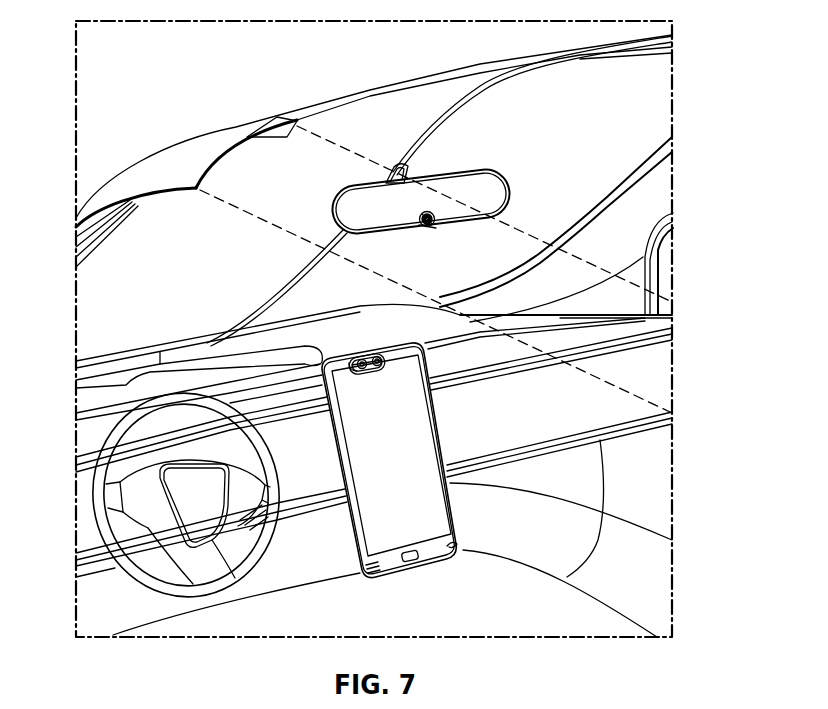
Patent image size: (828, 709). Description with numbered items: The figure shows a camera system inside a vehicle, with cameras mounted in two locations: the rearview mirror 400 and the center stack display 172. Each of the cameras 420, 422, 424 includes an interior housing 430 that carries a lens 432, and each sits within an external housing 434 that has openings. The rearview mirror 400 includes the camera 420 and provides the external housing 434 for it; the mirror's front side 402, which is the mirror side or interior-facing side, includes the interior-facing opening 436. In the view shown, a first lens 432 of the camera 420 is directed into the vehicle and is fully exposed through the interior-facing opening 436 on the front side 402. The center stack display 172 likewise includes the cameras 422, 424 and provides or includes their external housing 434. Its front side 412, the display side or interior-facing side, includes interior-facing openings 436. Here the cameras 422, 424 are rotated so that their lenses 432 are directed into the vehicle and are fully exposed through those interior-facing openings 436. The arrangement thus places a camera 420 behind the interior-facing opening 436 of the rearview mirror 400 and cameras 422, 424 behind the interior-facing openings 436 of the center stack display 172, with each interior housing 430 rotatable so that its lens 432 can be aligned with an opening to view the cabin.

The center stack display 172 is at (462, 514).
The rearview mirror 400 is at (508, 152).
The front side 402 is at (482, 184).
The front side 412 is at (408, 463).
The camera 420 is at (434, 250).
The camera 422 is at (355, 352).
The camera 424 is at (372, 341).
The interior housing 430 is at (426, 225).
The lens 432 is at (432, 225).
The external housing 434 is at (433, 223).
The interior-facing opening 436 is at (417, 213).